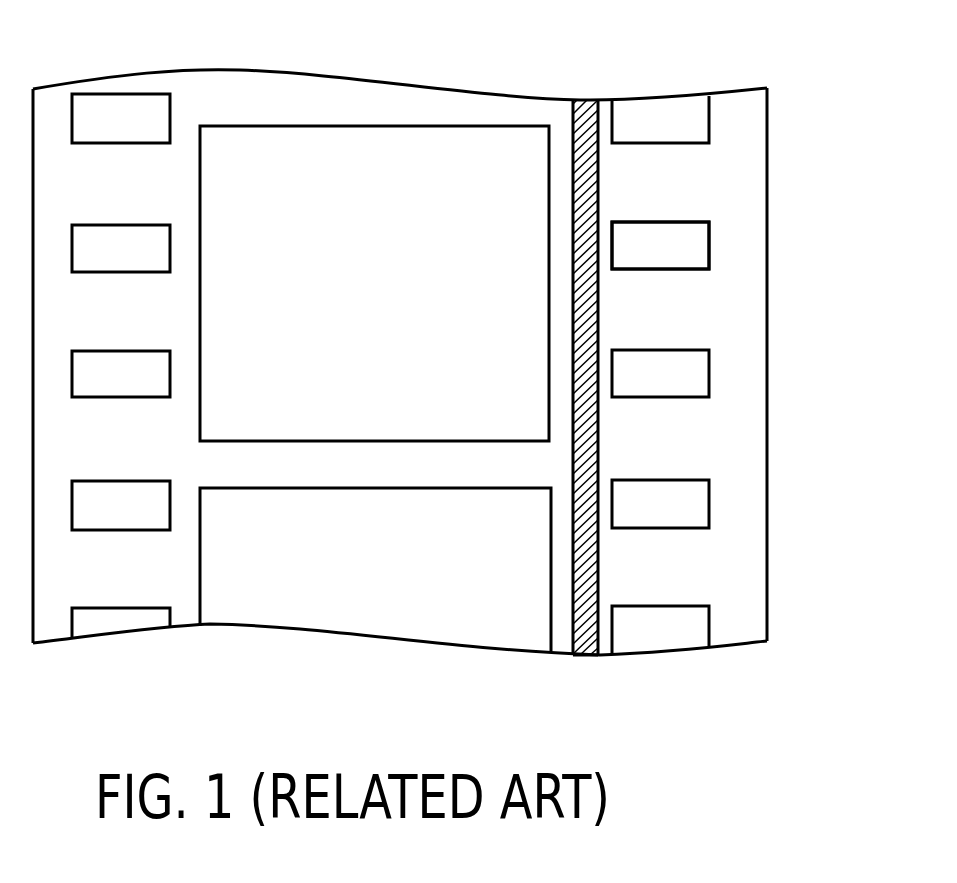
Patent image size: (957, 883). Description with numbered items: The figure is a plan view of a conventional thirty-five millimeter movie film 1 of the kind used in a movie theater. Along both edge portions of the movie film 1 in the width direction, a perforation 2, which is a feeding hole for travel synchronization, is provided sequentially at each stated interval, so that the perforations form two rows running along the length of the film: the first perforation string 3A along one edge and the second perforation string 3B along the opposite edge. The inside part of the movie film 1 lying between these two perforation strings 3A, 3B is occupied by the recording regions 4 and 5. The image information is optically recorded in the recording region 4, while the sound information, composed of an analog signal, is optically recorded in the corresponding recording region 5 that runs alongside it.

The movie film 1 is at (785, 562).
The perforation 2 is at (711, 251).
The first perforation string 3A is at (95, 76).
The second perforation string 3B is at (636, 98).
The recording region 4 is at (313, 165).
The recording region 5 is at (588, 657).